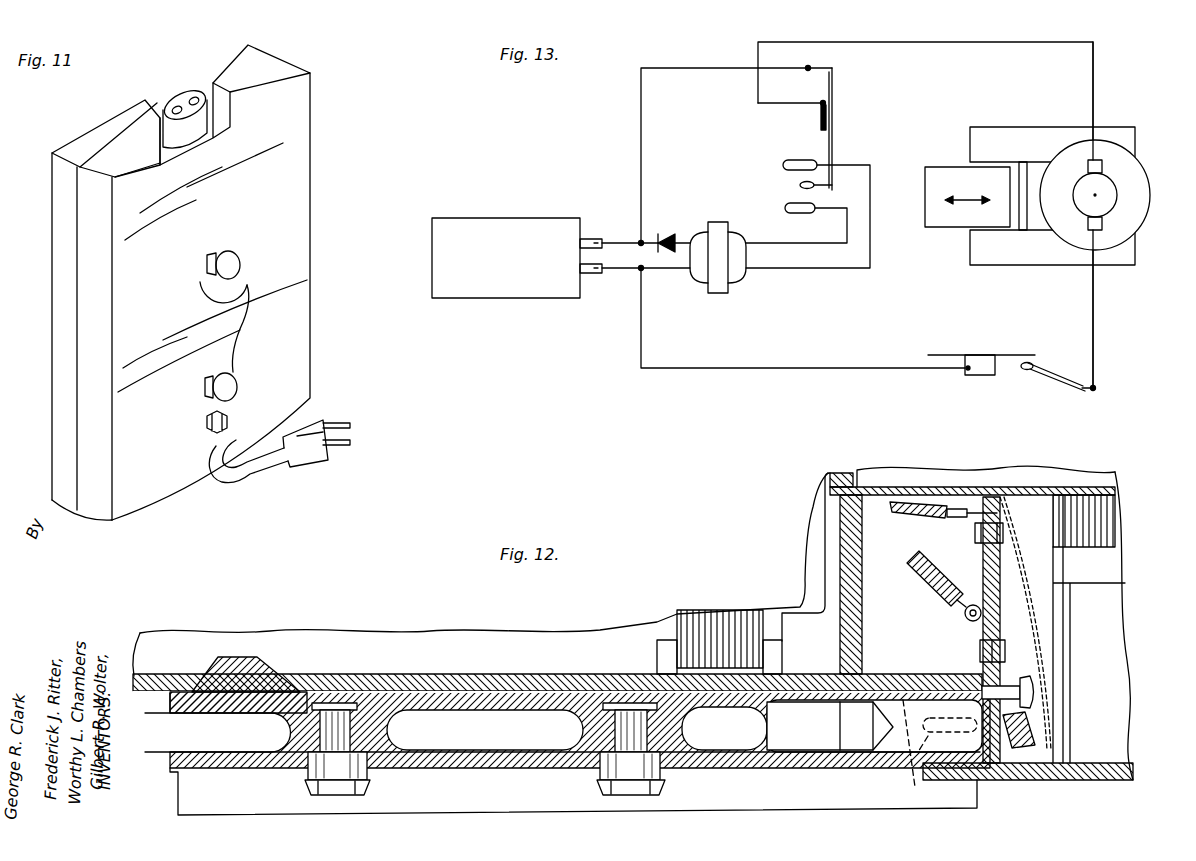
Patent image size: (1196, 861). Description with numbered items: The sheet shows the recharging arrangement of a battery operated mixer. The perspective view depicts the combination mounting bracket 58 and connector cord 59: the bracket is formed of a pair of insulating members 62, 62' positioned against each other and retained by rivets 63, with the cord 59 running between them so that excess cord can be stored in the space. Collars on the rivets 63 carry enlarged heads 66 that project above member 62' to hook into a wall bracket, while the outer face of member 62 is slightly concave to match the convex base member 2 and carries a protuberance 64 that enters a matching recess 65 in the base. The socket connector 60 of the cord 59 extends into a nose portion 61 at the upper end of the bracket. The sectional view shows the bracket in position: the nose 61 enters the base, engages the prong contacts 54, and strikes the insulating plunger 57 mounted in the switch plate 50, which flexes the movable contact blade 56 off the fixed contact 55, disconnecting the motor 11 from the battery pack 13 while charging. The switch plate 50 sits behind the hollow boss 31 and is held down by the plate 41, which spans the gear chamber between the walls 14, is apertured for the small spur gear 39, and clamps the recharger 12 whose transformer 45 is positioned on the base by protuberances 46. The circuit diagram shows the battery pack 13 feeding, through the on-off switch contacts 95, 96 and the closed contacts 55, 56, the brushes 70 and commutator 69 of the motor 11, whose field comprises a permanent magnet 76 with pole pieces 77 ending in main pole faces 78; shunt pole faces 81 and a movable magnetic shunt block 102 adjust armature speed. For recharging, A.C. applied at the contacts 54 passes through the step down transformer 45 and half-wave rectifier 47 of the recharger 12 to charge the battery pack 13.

In FIG. 12, the base member 2 is at (485, 667).
In FIG. 13, the motor 11 is at (1165, 153).
In FIG. 13, the recharger 12 is at (720, 285).
In FIG. 12, the recharger 12 is at (736, 603).
In FIG. 13, the battery pack 13 is at (508, 230).
In FIG. 12, the walls 14 is at (847, 550).
In FIG. 12, the hollow boss 31 is at (1110, 657).
In FIG. 12, the small spur gear 39 is at (1093, 538).
In FIG. 12, the plate 41 is at (880, 473).
In FIG. 13, the step down transformer 45 is at (720, 234).
In FIG. 12, the step down transformer 45 is at (700, 618).
In FIG. 12, the protuberances 46 is at (663, 647).
In FIG. 13, the half-wave silicone diode rectifier 47 is at (668, 234).
In FIG. 12, the switch plate 50 is at (987, 567).
In FIG. 13, the prong contacts 54 is at (782, 166).
In FIG. 12, the prong contacts 54 is at (940, 753).
In FIG. 13, the fixed contact 55 is at (820, 116).
In FIG. 12, the fixed contact 55 is at (980, 652).
In FIG. 13, the movable contact blade 56 is at (833, 143).
In FIG. 12, the movable contact blade 56 is at (1010, 590).
In FIG. 13, the insulating plunger 57 is at (800, 186).
In FIG. 12, the insulating plunger 57 is at (1034, 722).
In FIG. 11, the mounting bracket 58 is at (297, 218).
In FIG. 12, the mounting bracket 58 is at (195, 792).
In FIG. 11, the connector cord 59 is at (267, 465).
In FIG. 12, the connector cord 59 is at (503, 732).
In FIG. 12, the socket connector 60 is at (888, 765).
In FIG. 11, the nose portion 61 is at (184, 98).
In FIG. 12, the nose portion 61 is at (957, 670).
In FIG. 11, the insulating member 62 is at (32, 286).
In FIG. 12, the insulating member 62 is at (561, 707).
In FIG. 11, the insulating member 62' is at (48, 332).
In FIG. 12, the insulating member 62' is at (575, 776).
In FIG. 11, the rivets 63 is at (210, 378).
In FIG. 12, the rivets 63 is at (333, 717).
In FIG. 11, the protuberance 64 is at (206, 421).
In FIG. 12, the protuberance 64 is at (242, 678).
In FIG. 12, the recess 65 is at (227, 670).
In FIG. 11, the enlarged heads 66 is at (248, 286).
In FIG. 12, the enlarged heads 66 is at (308, 795).
In FIG. 13, the commutator 69 is at (1108, 184).
In FIG. 13, the brushes 70 is at (1102, 167).
In FIG. 13, the permanent magnet 76 is at (1019, 173).
In FIG. 13, the pole pieces 77 is at (1015, 127).
In FIG. 13, the main pole faces 78 is at (1110, 138).
In FIG. 13, the magnetic shunt pole faces 81 is at (990, 167).
In FIG. 13, the on-off switch contact 95 is at (948, 354).
In FIG. 13, the on-off switch contact 96 is at (1058, 372).
In FIG. 13, the magnetic shunt block 102 is at (943, 173).